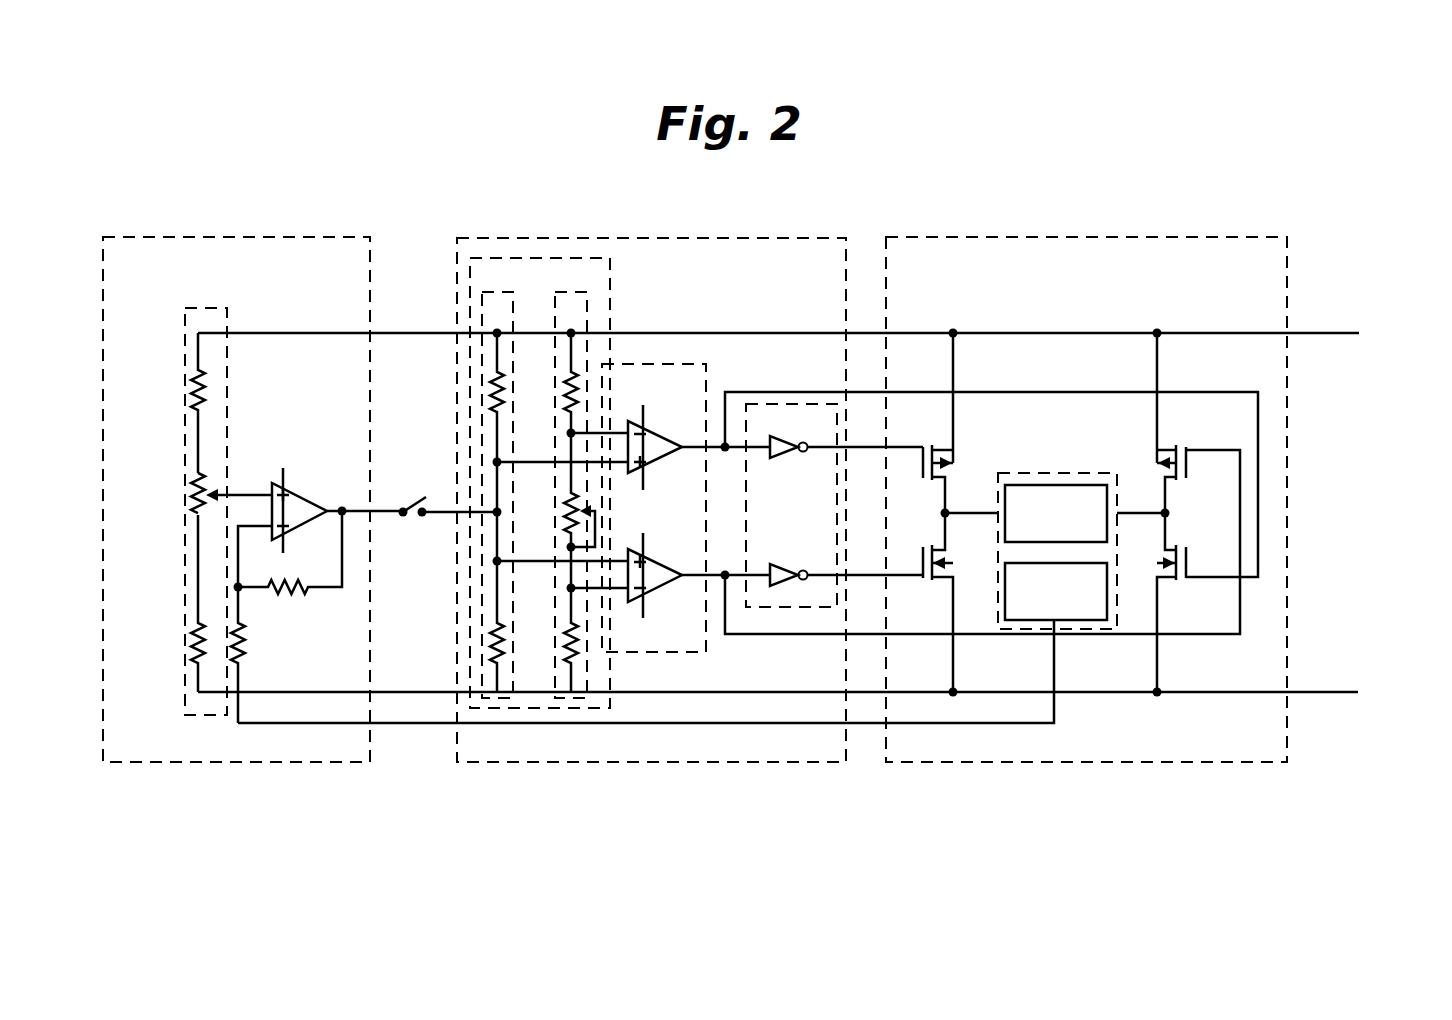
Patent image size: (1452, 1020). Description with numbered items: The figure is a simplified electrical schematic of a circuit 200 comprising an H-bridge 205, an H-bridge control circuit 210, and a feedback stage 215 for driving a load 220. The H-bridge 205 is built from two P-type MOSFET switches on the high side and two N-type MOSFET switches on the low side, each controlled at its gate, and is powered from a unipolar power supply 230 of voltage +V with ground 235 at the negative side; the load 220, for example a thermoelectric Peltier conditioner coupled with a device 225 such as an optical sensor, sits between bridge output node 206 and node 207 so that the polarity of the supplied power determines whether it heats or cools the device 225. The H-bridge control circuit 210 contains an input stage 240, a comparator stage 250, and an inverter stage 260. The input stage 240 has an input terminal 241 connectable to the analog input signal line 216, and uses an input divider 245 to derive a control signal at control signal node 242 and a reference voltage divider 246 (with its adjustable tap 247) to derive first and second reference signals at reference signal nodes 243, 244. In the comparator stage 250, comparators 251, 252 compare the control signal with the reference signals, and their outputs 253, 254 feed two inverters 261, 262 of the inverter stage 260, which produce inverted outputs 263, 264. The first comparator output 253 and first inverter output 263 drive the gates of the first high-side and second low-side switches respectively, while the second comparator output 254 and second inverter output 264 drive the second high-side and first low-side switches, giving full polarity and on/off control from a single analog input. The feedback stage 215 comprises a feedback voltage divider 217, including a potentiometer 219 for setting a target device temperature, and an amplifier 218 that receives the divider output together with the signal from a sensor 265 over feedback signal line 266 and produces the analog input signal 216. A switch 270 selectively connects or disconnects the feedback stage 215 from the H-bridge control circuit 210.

The circuit 200 is at (334, 190).
The H-bridge 205 is at (1005, 237).
The node 206 is at (947, 511).
The node 207 is at (1163, 511).
The H-bridge control circuit 210 is at (700, 238).
The feedback stage 215 is at (195, 236).
The analog input signal line 216 is at (342, 503).
The feedback voltage divider 217 is at (215, 307).
The amplifier 218 is at (292, 483).
The potentiometer 219 is at (192, 485).
The load 220 is at (1056, 513).
The device 225 is at (1118, 612).
The unipolar power supply 230 is at (1322, 331).
The ground 235 is at (1308, 694).
The input stage 240 is at (527, 258).
The input terminal 241 is at (442, 515).
The control signal node 242 is at (500, 513).
The reference signal node 243 is at (572, 432).
The reference signal node 244 is at (572, 590).
The input divider 245 is at (502, 292).
The reference voltage divider 246 is at (575, 292).
The adjustable tap 247 is at (584, 500).
The comparator stage 250 is at (660, 363).
The comparator 251 is at (648, 424).
The comparator 252 is at (648, 552).
The output of the first comparator 253 is at (725, 445).
The output of the second comparator 254 is at (725, 580).
The inverter stage 260 is at (790, 403).
The inverter 261 is at (772, 458).
The inverter 262 is at (770, 564).
The output of the first inverter 263 is at (827, 450).
The output of the second inverter 264 is at (823, 578).
The sensor 265 is at (1056, 591).
The feedback signal line 266 is at (966, 724).
The switch 270 is at (405, 497).